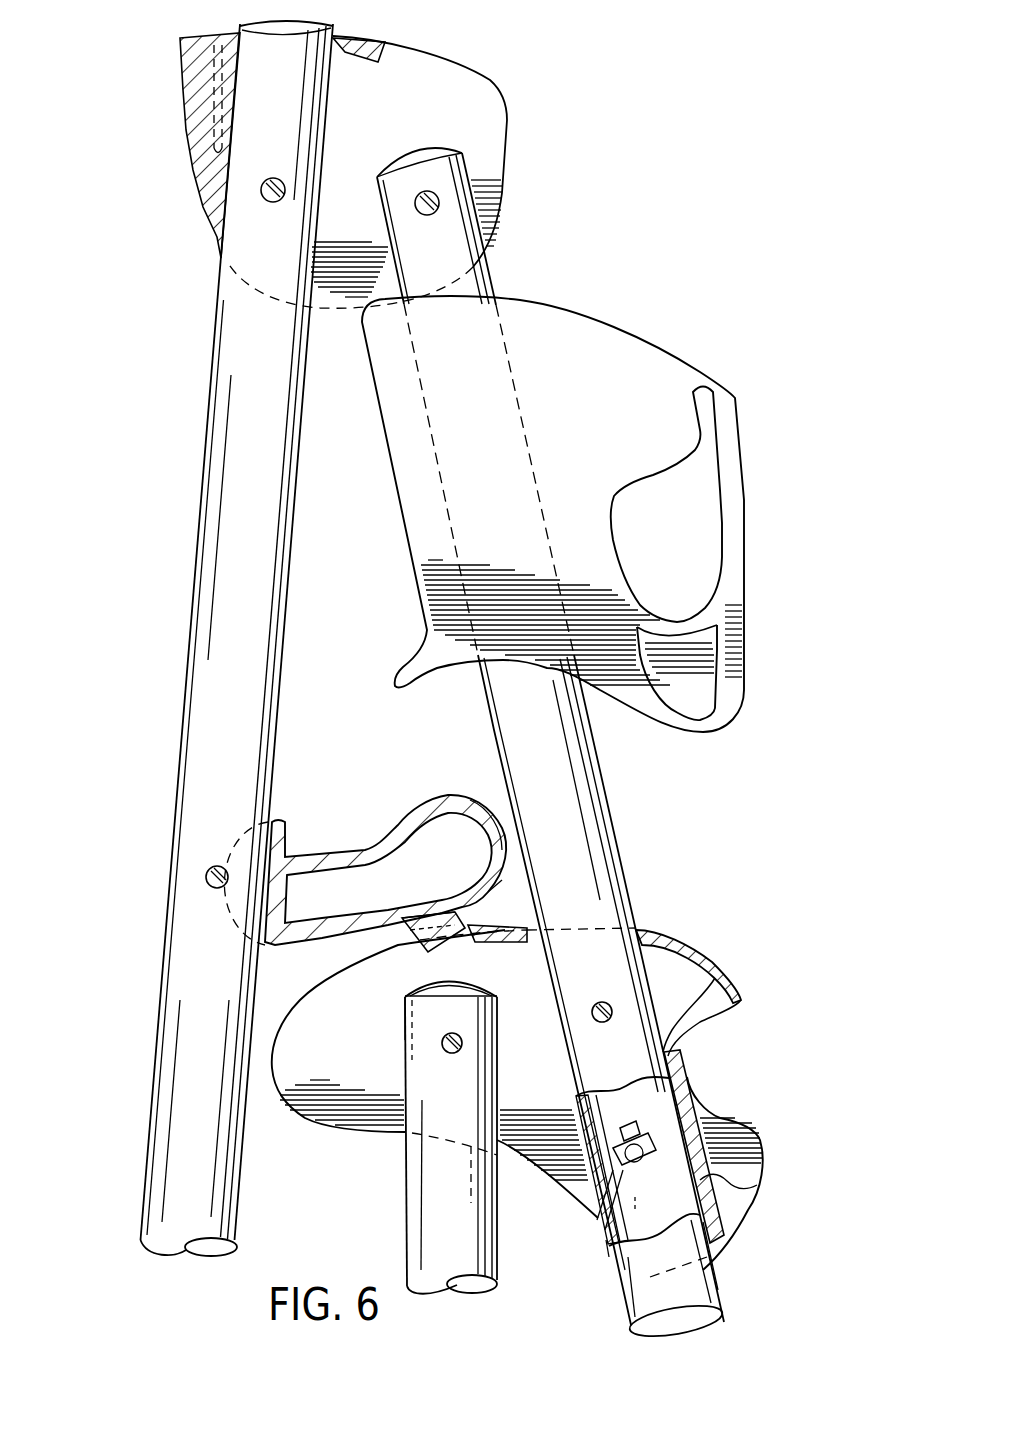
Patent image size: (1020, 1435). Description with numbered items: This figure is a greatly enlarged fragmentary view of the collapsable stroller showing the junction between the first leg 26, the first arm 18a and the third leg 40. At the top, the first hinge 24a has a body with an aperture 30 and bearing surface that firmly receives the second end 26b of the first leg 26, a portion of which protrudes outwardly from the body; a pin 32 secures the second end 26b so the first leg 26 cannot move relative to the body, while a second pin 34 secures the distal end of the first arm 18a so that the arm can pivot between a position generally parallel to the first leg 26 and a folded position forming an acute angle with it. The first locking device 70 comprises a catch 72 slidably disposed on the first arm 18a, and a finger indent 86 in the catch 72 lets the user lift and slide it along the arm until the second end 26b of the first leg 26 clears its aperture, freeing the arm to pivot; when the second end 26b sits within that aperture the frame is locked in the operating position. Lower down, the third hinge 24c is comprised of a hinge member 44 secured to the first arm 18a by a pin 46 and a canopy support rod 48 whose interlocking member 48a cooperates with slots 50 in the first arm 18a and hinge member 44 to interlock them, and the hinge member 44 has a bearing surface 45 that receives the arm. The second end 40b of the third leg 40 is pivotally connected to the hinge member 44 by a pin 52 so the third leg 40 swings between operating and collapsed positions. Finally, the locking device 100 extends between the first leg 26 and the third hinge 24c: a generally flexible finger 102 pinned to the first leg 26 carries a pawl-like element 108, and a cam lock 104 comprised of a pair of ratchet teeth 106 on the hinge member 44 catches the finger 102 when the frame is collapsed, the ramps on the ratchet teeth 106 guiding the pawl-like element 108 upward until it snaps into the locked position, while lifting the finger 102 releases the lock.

The first leg 26 is at (262, 596).
The second end of the first leg 26b is at (293, 68).
The first hinge 24a is at (183, 107).
The aperture 30 is at (210, 198).
The pin 32 is at (287, 200).
The second pin 34 is at (441, 198).
The first arm 18a is at (583, 800).
The catch 72 is at (640, 352).
The finger indent 86 is at (692, 513).
The first locking device 70 is at (790, 662).
The locking device 100 is at (375, 838).
The flexible finger 102 is at (448, 797).
The cam lock 104 is at (408, 948).
The ratchet teeth 106 is at (398, 942).
The pawl-like element 108 is at (513, 877).
The third hinge 24c is at (677, 946).
The hinge member 44 is at (690, 1064).
The bearing surface 45 is at (740, 1188).
The third leg 40 is at (462, 1252).
The second end of the third leg 40b is at (442, 1015).
The pin 52 is at (452, 1056).
The pin 46 is at (604, 1023).
The canopy support rod 48 is at (603, 1217).
The interlocking member 48a is at (620, 1173).
The slots 50 is at (609, 1257).